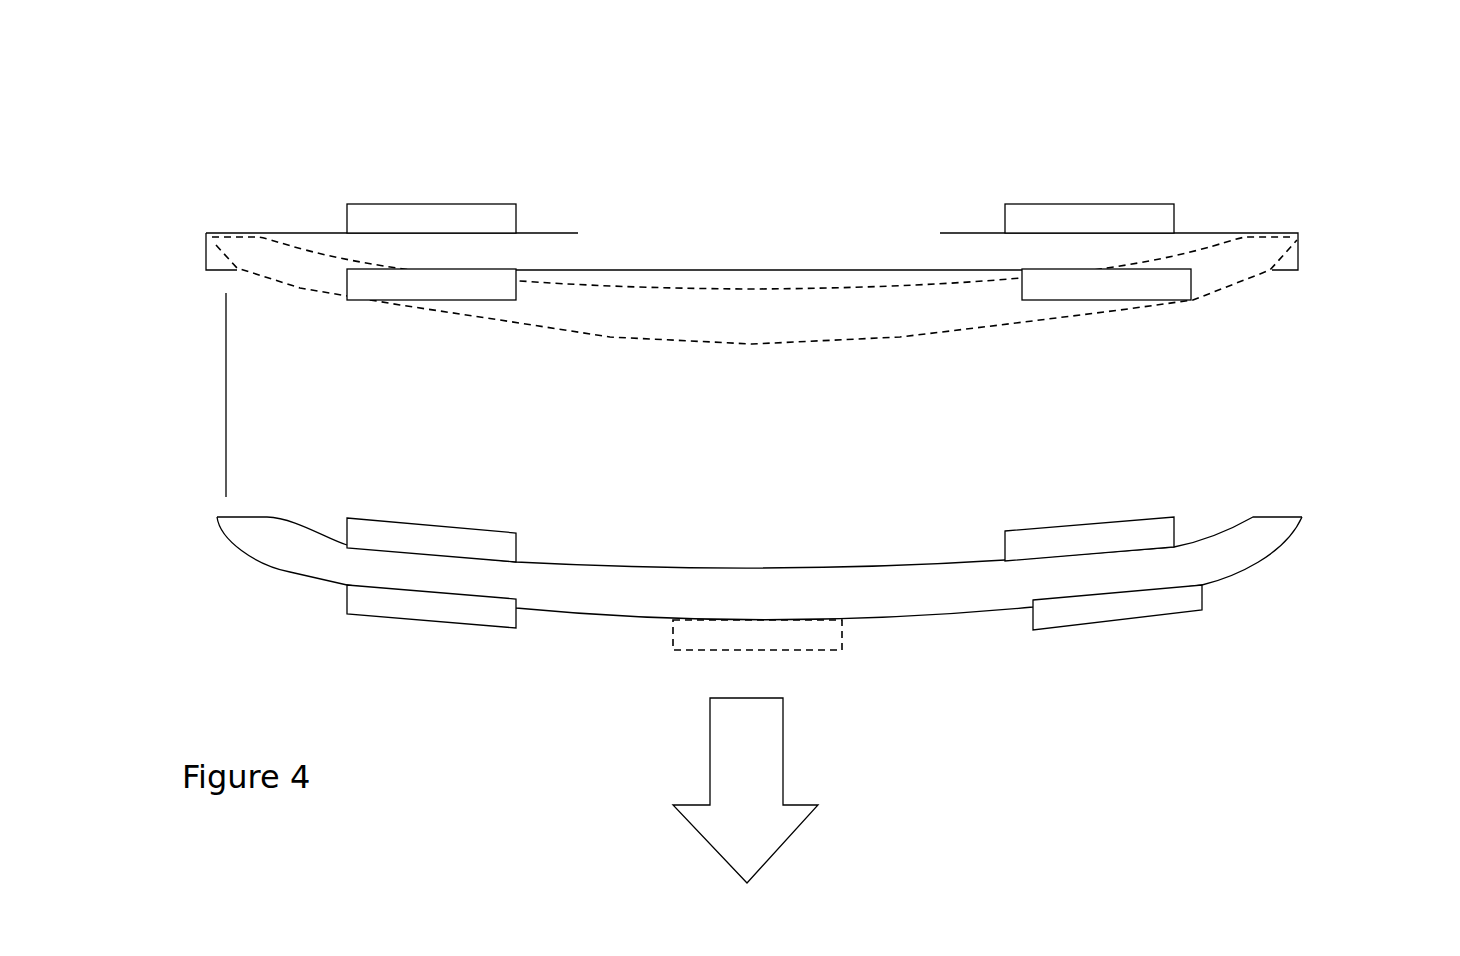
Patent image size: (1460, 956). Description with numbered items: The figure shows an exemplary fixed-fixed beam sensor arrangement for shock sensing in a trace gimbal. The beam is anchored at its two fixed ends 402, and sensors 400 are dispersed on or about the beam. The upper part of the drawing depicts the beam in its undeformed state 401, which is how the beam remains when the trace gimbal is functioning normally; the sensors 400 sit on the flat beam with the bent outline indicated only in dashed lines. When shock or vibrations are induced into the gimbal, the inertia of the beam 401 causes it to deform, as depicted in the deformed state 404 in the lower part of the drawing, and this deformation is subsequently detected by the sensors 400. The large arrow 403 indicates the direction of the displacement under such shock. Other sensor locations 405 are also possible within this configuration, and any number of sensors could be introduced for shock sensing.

The sensors 400 is at (1029, 200).
The undeformed beam 401 is at (752, 272).
The fixed ends 402 is at (247, 502).
The direction of displacement arrow 403 is at (758, 790).
The deformed beam 404 is at (774, 576).
The other sensor locations 405 is at (735, 657).